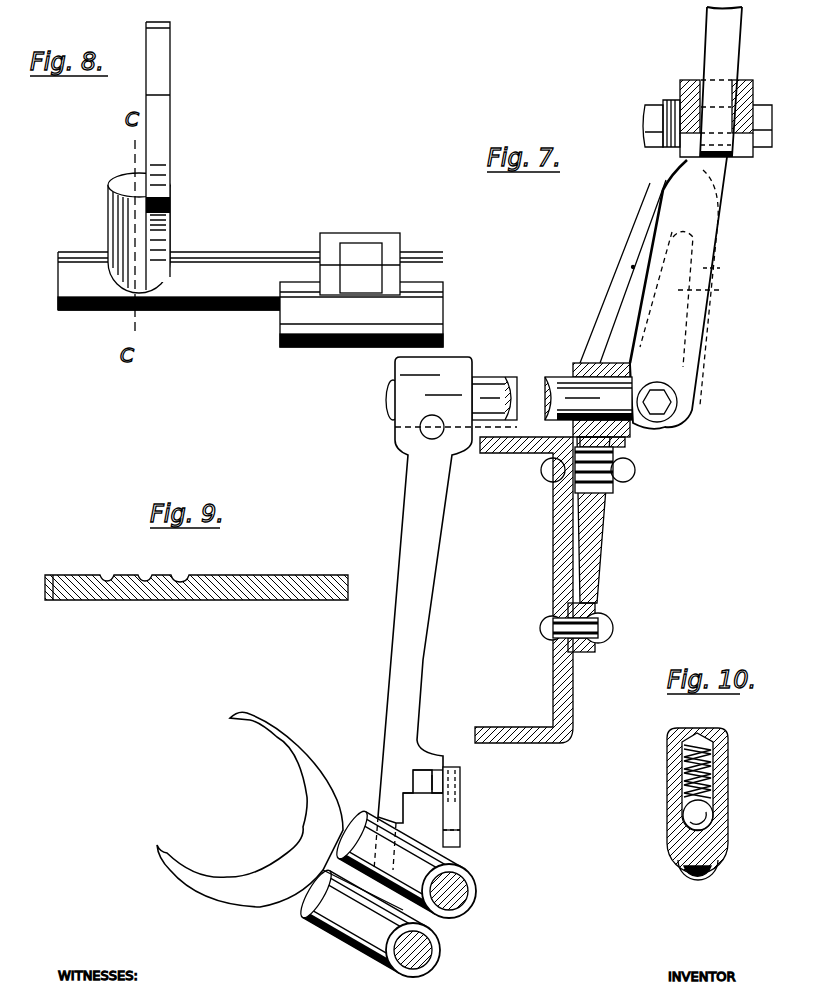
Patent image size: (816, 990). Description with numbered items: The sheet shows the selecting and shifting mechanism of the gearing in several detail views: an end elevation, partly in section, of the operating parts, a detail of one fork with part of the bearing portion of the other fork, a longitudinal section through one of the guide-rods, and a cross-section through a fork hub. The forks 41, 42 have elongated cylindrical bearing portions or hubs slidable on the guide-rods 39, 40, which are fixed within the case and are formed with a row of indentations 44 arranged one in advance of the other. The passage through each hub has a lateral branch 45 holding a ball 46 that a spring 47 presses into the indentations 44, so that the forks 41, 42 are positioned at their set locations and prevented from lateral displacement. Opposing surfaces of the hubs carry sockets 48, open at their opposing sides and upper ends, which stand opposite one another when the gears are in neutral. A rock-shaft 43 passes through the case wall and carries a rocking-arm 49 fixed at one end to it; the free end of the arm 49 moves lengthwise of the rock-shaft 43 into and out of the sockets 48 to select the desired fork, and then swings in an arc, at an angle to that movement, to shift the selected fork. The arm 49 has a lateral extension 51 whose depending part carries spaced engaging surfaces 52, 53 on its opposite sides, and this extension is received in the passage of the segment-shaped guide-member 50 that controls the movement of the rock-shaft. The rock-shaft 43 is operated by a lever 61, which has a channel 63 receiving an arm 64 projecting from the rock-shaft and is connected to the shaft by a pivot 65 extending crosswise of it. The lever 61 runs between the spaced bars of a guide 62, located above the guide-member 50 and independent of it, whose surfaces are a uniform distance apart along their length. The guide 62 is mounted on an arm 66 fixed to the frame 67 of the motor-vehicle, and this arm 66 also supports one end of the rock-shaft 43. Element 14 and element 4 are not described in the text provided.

In FIG. 10, the housing 4 is at (666, 798).
In FIG. 8, the rod 14 is at (342, 325).
In FIG. 7, the guide-rod 39 is at (477, 887).
In FIG. 10, the guide-rod 40 is at (683, 846).
In FIG. 7, the guide-rod 40 is at (433, 953).
In FIG. 7, the fork 41 is at (422, 863).
In FIG. 8, the fork 42 is at (118, 235).
In FIG. 7, the fork 42 is at (315, 927).
In FIG. 7, the rock-shaft 43 is at (572, 382).
In FIG. 9, the indentations 44 is at (185, 578).
In FIG. 7, the indentations 44 is at (423, 917).
In FIG. 8, the lateral branches 45 is at (125, 200).
In FIG. 10, the lateral branches 45 is at (722, 766).
In FIG. 10, the balls 46 is at (716, 813).
In FIG. 10, the springs 47 is at (680, 768).
In FIG. 8, the sockets 48 is at (360, 277).
In FIG. 7, the rocking-arm 49 is at (423, 566).
In FIG. 7, the guide-member 50 is at (460, 773).
In FIG. 7, the lateral extension 51 is at (436, 790).
In FIG. 7, the engaging surface 52 is at (430, 782).
In FIG. 7, the engaging surface 53 is at (443, 768).
In FIG. 7, the lever 61 is at (730, 33).
In FIG. 7, the guide 62 is at (753, 92).
In FIG. 7, the channel 63 is at (720, 270).
In FIG. 7, the arm 64 is at (722, 290).
In FIG. 7, the pivot 65 is at (656, 408).
In FIG. 7, the arm 66 is at (666, 180).
In FIG. 7, the frame 67 is at (565, 692).